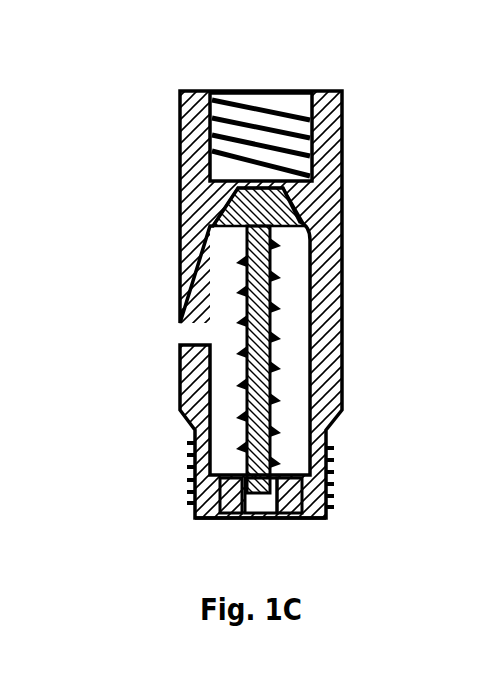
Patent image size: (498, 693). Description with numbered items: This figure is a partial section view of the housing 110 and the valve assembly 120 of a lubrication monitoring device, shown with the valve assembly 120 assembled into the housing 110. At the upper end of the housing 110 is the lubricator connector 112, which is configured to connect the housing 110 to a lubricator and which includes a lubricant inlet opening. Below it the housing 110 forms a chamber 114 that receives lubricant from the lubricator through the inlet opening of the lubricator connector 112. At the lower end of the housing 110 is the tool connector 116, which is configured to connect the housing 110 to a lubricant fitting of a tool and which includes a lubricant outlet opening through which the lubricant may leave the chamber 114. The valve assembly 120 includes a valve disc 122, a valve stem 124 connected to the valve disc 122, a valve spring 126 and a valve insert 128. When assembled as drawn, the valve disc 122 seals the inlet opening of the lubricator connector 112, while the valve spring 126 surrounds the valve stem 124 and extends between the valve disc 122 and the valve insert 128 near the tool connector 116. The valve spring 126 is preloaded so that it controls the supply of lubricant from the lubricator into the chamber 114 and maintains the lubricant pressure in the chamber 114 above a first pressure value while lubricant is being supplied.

The housing 110 is at (180, 208).
The lubricator connector 112 is at (283, 75).
The chamber 114 is at (288, 352).
The tool connector 116 is at (348, 474).
The valve assembly 120 is at (80, 268).
The valve disc 122 is at (228, 222).
The valve stem 124 is at (247, 278).
The valve spring 126 is at (247, 352).
The valve insert 128 is at (205, 483).